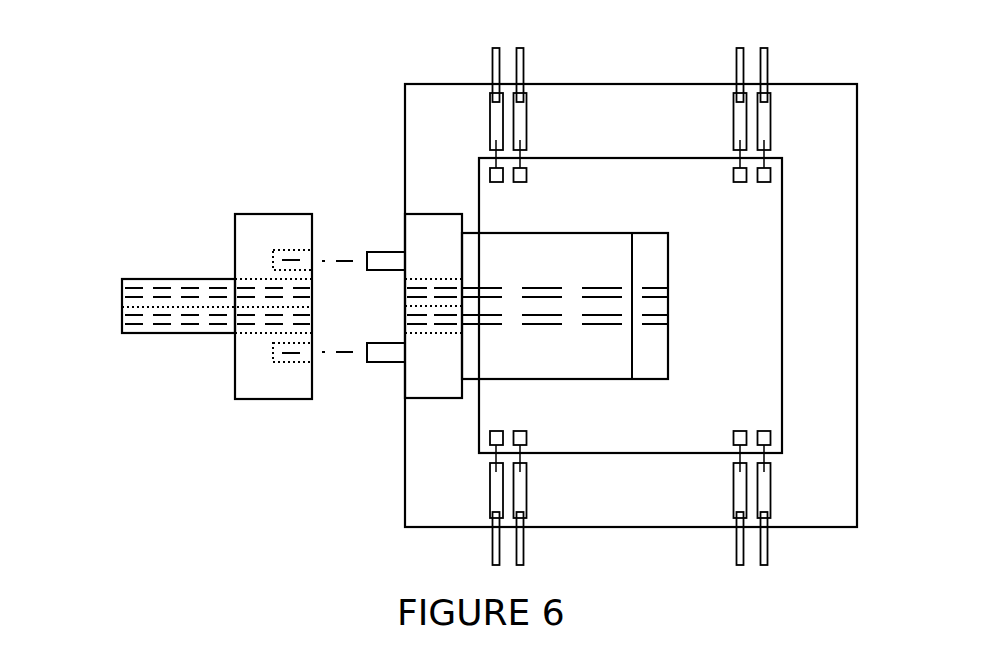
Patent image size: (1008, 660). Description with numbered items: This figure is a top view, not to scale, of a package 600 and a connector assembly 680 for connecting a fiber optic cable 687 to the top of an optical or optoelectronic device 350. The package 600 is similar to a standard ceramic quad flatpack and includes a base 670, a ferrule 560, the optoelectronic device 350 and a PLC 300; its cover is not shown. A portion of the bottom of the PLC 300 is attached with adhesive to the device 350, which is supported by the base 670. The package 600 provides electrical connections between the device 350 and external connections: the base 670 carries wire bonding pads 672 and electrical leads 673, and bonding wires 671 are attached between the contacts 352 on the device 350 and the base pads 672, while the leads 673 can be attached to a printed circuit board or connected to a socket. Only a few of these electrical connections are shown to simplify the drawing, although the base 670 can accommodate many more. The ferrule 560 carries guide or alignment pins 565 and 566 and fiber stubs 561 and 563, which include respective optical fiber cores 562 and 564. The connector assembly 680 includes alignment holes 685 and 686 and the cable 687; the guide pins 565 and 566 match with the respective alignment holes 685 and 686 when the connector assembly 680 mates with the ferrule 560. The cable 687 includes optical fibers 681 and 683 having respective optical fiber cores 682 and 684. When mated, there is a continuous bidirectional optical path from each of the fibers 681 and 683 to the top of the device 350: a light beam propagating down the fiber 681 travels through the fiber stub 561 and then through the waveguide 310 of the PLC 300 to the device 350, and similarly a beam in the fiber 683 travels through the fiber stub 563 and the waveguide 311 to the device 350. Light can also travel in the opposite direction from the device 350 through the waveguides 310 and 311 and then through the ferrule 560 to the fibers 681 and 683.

The package 600 is at (456, 306).
The base 670 is at (678, 509).
The optoelectronic device 350 is at (678, 439).
The PLC 300 is at (616, 367).
The waveguide 311 is at (610, 292).
The waveguide 310 is at (608, 320).
The ferrule 560 is at (385, 195).
The fiber stub 563 is at (448, 278).
The fiber stub 561 is at (445, 335).
The optical fiber core 564 is at (447, 292).
The optical fiber core 562 is at (449, 320).
The guide pin 566 is at (387, 250).
The guide pin 565 is at (387, 365).
The electrical leads 673 is at (722, 66).
The bonding pads 672 is at (720, 114).
The bonding wires 671 is at (720, 148).
The contacts 352 is at (715, 173).
The connector assembly 680 is at (183, 283).
The fiber optic cable 687 is at (125, 235).
The optical fiber 683 is at (208, 278).
The optical fiber 681 is at (210, 333).
The optical fiber core 684 is at (155, 292).
The optical fiber core 682 is at (153, 318).
The alignment hole 686 is at (290, 250).
The alignment hole 685 is at (287, 363).